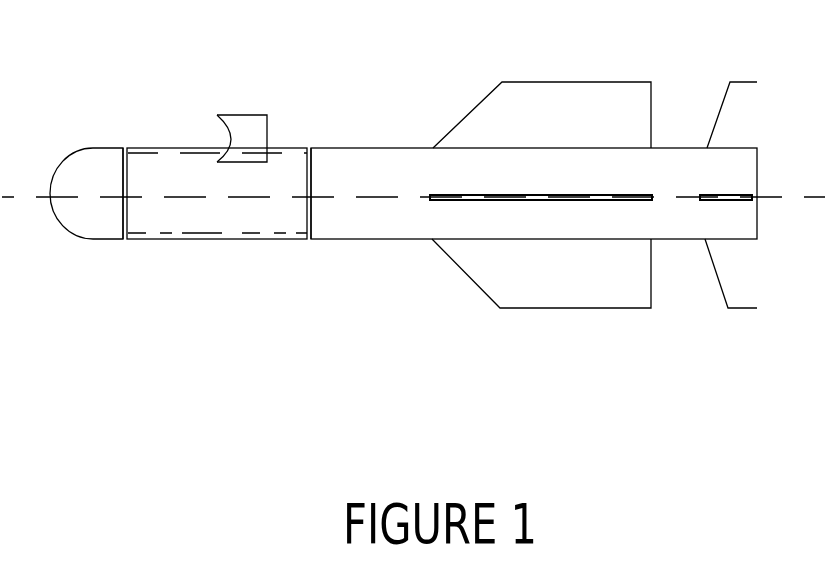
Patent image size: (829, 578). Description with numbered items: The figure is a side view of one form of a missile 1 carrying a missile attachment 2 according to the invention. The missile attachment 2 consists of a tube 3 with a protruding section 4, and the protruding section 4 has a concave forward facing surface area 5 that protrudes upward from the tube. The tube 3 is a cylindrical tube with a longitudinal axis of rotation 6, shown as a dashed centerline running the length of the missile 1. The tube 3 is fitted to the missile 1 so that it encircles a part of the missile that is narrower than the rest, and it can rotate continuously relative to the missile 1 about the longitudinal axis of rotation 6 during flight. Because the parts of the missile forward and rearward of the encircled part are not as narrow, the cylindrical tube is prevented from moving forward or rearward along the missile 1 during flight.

The missile 1 is at (387, 215).
The missile attachment 2 is at (168, 217).
The tube 3 is at (242, 230).
The protruding section 4 is at (248, 133).
The concave forward facing surface area 5 is at (232, 142).
The longitudinal axis of rotation 6 is at (260, 200).